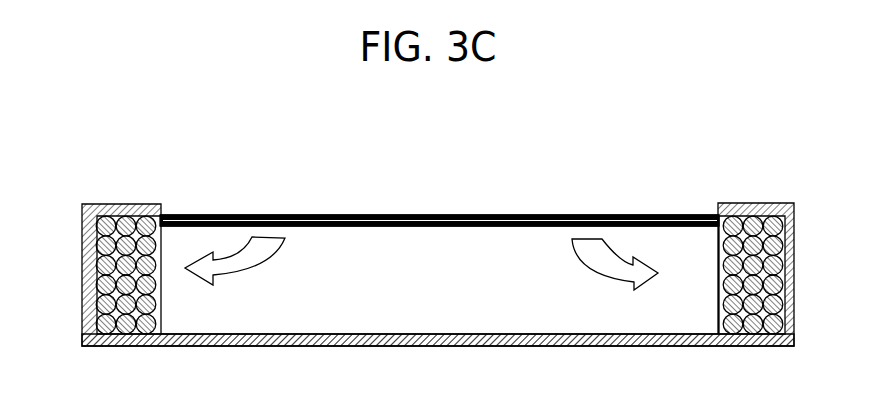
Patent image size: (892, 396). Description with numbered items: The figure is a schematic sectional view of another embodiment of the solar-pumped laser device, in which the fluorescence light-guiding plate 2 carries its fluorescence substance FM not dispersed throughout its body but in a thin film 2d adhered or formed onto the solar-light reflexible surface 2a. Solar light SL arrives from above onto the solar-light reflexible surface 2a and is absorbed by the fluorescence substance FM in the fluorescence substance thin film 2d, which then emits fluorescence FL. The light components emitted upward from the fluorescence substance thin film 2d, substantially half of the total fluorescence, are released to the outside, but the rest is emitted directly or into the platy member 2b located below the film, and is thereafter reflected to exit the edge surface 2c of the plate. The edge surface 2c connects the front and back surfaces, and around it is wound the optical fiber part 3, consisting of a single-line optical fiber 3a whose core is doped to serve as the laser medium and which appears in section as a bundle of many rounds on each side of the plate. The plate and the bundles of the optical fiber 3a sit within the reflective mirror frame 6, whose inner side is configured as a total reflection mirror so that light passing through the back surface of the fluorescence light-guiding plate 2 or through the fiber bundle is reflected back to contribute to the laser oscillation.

The fluorescence light-guiding plate 2 is at (353, 207).
The solar-light reflexible surface 2a is at (512, 215).
The platy member 2b is at (407, 296).
The edge surface 2c is at (182, 238).
The fluorescence substance thin film 2d is at (498, 226).
The optical fiber part 3 is at (772, 182).
The single-line optical fiber 3a is at (753, 218).
The reflective mirror frame 6 is at (155, 346).
The solar light SL is at (203, 212).
The fluorescence FL is at (217, 213).
The fluorescence substance FM is at (458, 215).